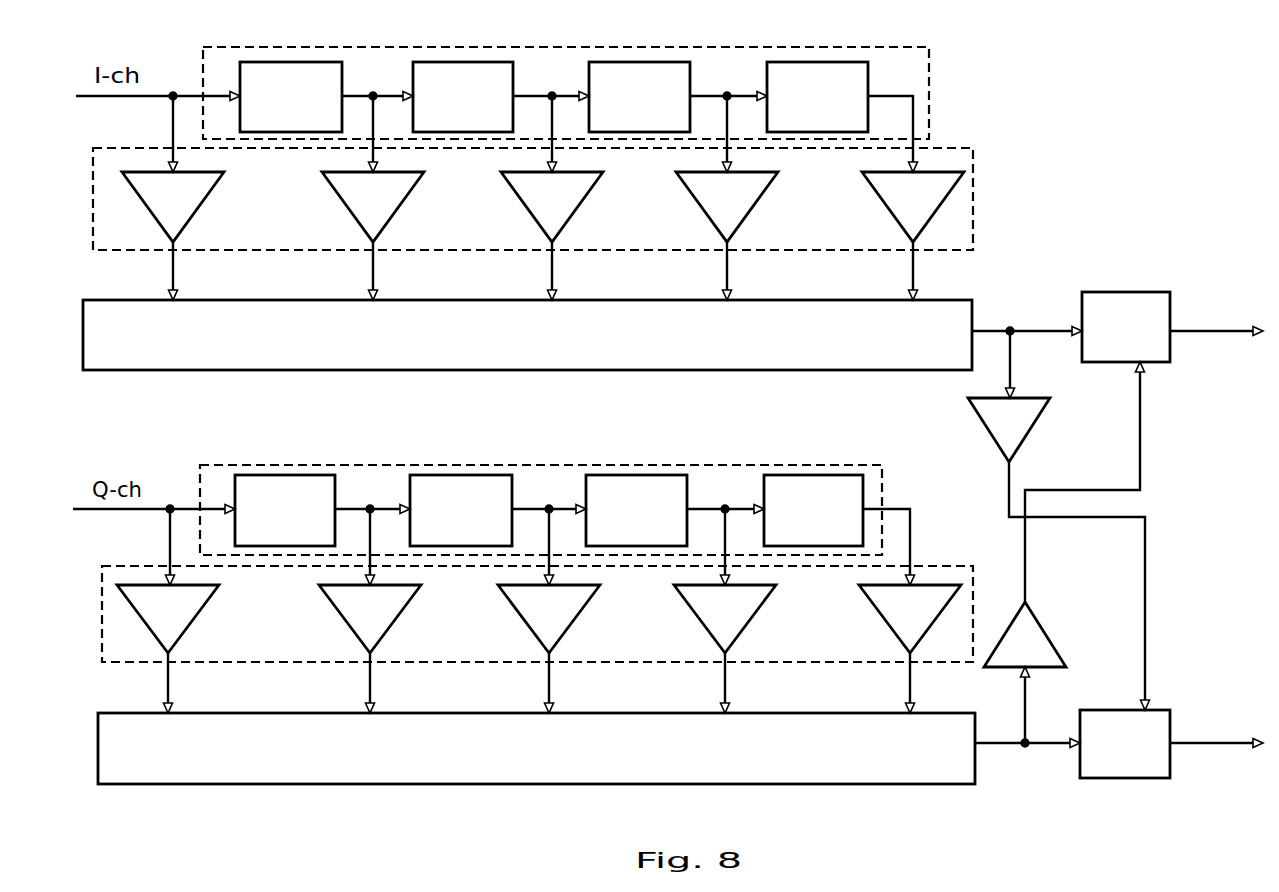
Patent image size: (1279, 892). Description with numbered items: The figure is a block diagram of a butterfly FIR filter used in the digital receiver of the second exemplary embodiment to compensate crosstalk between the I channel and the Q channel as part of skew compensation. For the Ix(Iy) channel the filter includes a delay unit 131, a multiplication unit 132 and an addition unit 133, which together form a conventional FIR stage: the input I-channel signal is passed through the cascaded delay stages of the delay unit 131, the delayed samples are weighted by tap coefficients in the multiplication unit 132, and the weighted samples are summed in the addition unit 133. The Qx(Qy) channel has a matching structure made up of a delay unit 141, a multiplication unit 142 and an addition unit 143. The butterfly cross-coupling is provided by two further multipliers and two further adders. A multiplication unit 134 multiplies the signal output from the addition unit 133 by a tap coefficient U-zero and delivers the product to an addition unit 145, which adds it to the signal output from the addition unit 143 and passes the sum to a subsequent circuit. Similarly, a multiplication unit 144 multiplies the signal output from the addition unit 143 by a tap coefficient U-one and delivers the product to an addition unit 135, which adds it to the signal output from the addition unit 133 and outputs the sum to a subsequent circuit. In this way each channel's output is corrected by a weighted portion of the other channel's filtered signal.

The delay unit 131 is at (835, 46).
The multiplication unit 132 is at (955, 146).
The addition unit 133 is at (957, 298).
The multiplication unit 134 is at (1023, 398).
The addition unit 135 is at (1165, 290).
The delay unit 141 is at (875, 465).
The multiplication unit 142 is at (930, 563).
The addition unit 143 is at (958, 785).
The multiplication unit 144 is at (1037, 615).
The addition unit 145 is at (1162, 708).